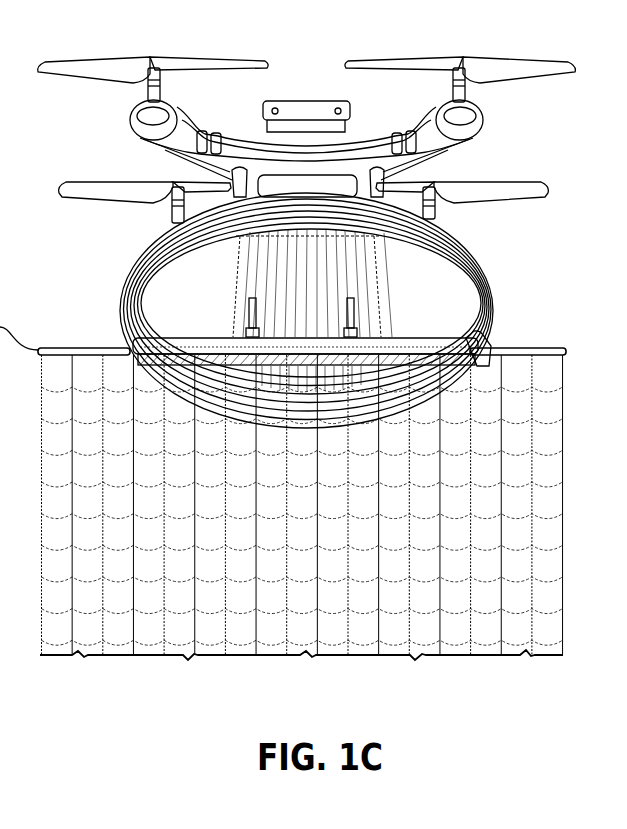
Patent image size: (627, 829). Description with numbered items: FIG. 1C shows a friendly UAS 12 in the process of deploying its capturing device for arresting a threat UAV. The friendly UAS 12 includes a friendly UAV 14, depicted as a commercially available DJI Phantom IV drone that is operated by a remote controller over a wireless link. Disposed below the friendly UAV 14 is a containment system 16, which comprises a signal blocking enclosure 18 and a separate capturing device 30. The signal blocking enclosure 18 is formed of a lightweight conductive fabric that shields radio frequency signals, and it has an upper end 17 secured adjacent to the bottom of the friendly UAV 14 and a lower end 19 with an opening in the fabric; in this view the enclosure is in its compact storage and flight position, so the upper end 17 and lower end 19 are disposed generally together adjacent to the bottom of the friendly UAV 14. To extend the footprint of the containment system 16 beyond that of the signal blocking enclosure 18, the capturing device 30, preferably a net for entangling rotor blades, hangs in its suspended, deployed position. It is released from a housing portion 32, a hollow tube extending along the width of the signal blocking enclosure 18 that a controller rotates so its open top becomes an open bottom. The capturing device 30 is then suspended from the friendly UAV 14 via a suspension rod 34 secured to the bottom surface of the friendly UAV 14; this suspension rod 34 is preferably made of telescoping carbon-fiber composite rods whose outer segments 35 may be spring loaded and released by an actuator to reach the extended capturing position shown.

The friendly UAS 12 is at (321, 140).
The friendly UAV 14 is at (148, 132).
The containment system 16 is at (308, 479).
The upper end 17 is at (480, 250).
The signal blocking enclosure 18 is at (118, 292).
The lower end 19 is at (493, 330).
The capturing device 30 is at (563, 542).
The housing portion 32 is at (180, 345).
The suspension rod 34 is at (67, 348).
The outer segments 35 is at (563, 350).